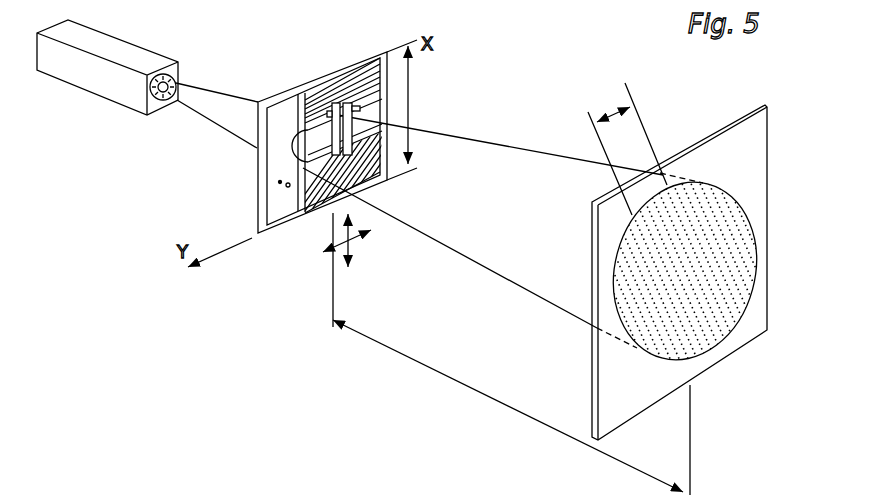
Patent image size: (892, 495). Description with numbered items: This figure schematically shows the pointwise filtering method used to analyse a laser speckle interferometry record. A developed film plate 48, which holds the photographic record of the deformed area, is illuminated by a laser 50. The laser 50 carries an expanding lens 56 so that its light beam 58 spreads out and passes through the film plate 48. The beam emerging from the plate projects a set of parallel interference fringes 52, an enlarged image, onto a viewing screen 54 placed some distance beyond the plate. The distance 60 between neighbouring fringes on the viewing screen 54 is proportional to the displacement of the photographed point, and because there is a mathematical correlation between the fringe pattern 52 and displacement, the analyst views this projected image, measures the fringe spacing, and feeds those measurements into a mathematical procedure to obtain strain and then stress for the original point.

The film plate 48 is at (320, 78).
The laser 50 is at (68, 70).
The interference fringes 52 is at (737, 202).
The viewing screen 54 is at (738, 333).
The expanding lens 56 is at (173, 78).
The light beam 58 is at (214, 125).
The distance between fringes 60 is at (597, 117).